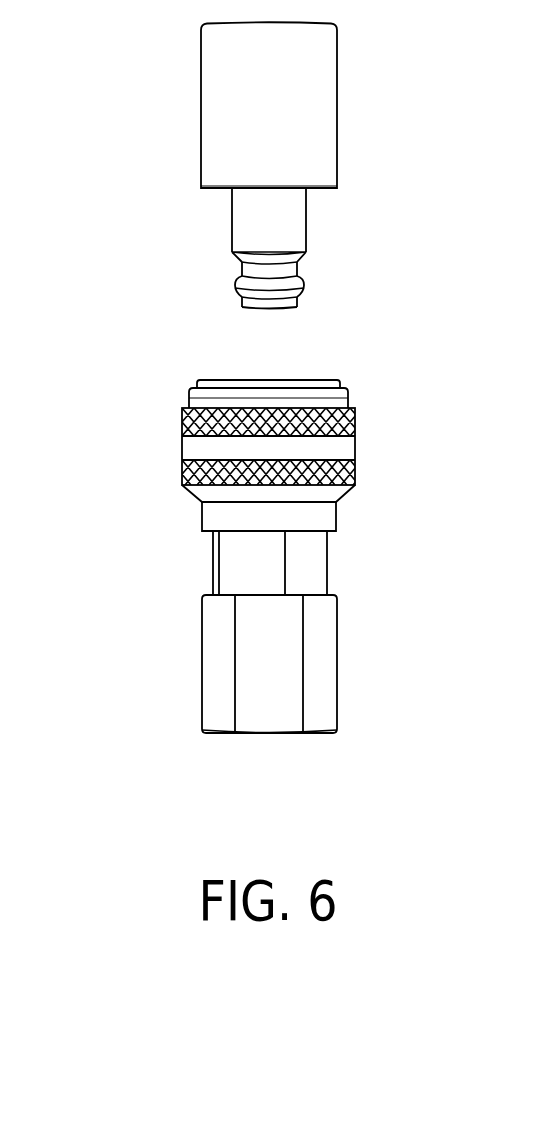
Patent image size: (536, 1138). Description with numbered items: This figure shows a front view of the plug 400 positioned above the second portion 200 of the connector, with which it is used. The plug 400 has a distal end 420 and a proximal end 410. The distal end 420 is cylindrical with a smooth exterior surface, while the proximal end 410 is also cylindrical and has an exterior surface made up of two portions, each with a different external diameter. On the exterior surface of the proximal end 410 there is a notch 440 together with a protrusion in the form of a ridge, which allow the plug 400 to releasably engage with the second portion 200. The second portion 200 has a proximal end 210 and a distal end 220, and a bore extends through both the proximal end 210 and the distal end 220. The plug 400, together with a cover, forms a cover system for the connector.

The plug 400 is at (134, 66).
The distal end 420 is at (362, 65).
The proximal end 410 is at (337, 236).
The notch 440 is at (242, 264).
The second portion 200 is at (154, 597).
The proximal end 210 is at (382, 453).
The distal end 220 is at (366, 678).